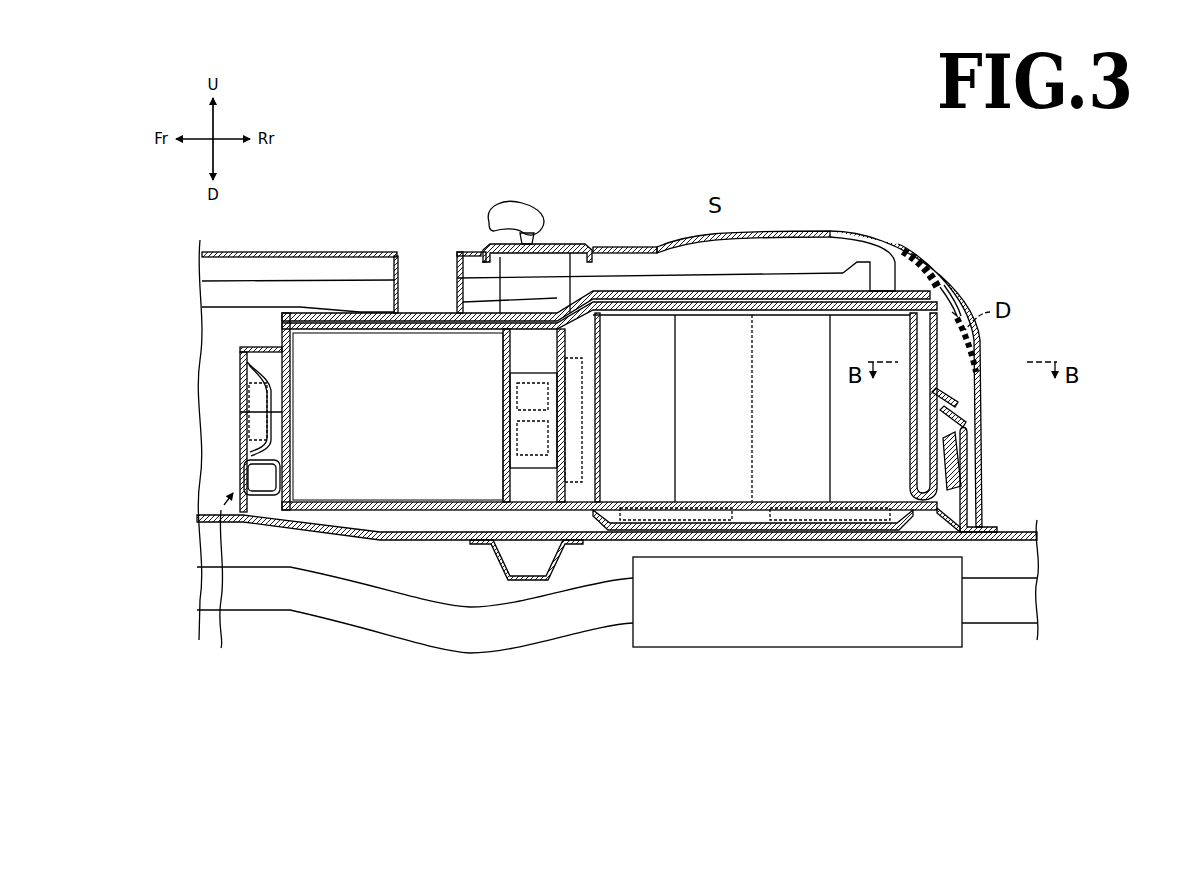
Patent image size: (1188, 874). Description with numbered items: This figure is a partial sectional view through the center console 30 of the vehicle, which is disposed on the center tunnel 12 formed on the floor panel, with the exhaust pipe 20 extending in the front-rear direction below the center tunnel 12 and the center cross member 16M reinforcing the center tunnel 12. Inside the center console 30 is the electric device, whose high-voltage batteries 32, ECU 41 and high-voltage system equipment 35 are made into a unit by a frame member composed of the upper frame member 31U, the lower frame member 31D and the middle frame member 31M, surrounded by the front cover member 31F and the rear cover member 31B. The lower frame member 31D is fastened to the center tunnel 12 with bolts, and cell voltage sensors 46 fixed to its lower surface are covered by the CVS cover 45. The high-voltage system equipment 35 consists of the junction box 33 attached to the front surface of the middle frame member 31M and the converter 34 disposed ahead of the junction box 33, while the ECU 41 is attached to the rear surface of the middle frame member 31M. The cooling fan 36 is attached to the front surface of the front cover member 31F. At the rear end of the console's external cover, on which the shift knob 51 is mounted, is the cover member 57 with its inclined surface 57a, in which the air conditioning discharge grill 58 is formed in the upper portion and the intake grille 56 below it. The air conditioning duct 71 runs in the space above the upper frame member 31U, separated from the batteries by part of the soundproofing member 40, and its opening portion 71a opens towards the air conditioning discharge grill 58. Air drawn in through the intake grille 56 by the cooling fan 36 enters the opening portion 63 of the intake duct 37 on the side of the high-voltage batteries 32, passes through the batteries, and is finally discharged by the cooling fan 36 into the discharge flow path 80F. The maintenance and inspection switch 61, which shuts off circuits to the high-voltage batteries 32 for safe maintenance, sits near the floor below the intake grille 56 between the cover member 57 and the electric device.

The center tunnel 12 is at (1013, 558).
The center cross member 16M is at (556, 560).
The exhaust pipe 20 is at (298, 593).
The center console 30 is at (845, 207).
The rear cover member 31B is at (968, 490).
The lower frame member 31D is at (363, 513).
The front cover member 31F is at (291, 390).
The middle frame member 31M is at (600, 375).
The upper frame member 31U is at (674, 300).
The high-voltage batteries 32 is at (797, 390).
The junction box 33 is at (505, 527).
The converter (PCU) 34 is at (425, 463).
The high-voltage system equipment 35 is at (506, 692).
The cooling fan 36 is at (263, 367).
The intake duct 37 is at (912, 413).
The soundproofing member 40 is at (380, 320).
The ECU 41 is at (575, 386).
The CVS cover 45 is at (906, 522).
The cell voltage sensors (CVS) 46 is at (803, 513).
The shift knob 51 is at (528, 210).
The intake grille 56 is at (962, 350).
The cover member 57 is at (985, 430).
The inclined surface 57a is at (945, 298).
The air conditioning discharge grill 58 is at (906, 256).
The maintenance and inspection switch 61 is at (958, 468).
The opening portion 63 is at (932, 378).
The air conditioning duct 71 is at (800, 273).
The opening portion 71a is at (875, 273).
The discharge flow path 80F is at (222, 510).